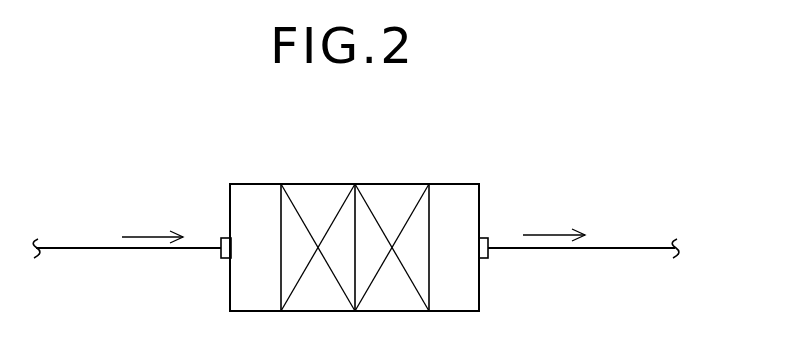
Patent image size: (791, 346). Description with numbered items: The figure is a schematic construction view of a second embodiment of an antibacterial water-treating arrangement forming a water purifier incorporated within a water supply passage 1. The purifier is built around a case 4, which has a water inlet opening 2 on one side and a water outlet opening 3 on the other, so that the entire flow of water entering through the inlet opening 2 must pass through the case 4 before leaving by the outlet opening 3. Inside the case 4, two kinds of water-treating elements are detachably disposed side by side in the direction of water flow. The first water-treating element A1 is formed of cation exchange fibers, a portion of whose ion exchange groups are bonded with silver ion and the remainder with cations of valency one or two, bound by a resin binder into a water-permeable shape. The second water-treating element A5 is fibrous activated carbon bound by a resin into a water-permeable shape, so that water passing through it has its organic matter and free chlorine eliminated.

The water supply passage 1 is at (77, 248).
The water inlet opening 2 is at (221, 253).
The water outlet opening 3 is at (488, 256).
The case 4 is at (479, 210).
The water-treating element A1 is at (281, 203).
The water-treating element A5 is at (429, 203).